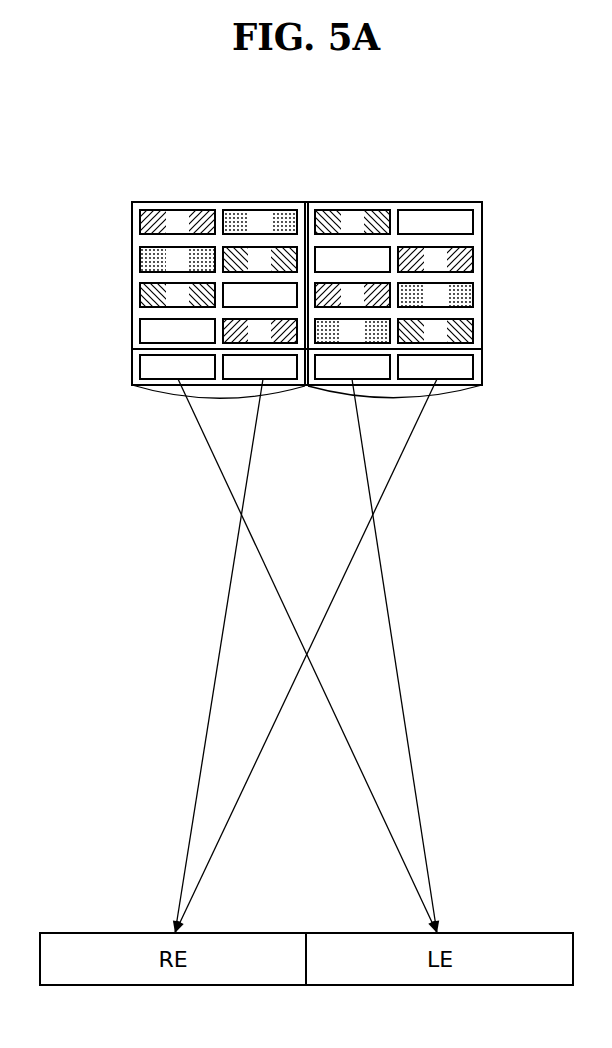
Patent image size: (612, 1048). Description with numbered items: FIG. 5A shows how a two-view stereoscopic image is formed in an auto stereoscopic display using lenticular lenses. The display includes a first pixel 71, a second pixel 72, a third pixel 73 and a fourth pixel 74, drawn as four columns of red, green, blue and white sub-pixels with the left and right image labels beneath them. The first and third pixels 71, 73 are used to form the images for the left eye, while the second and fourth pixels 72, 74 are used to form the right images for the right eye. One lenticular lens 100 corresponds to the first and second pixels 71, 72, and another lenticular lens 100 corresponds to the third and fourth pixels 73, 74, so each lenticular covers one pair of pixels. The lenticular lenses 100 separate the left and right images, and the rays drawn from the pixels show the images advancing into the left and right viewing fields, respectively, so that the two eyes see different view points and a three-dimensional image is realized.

The first pixel 71 is at (177, 210).
The second pixel 72 is at (259, 210).
The third pixel 73 is at (351, 210).
The fourth pixel 74 is at (434, 210).
The lenticular lens 100 is at (167, 393).